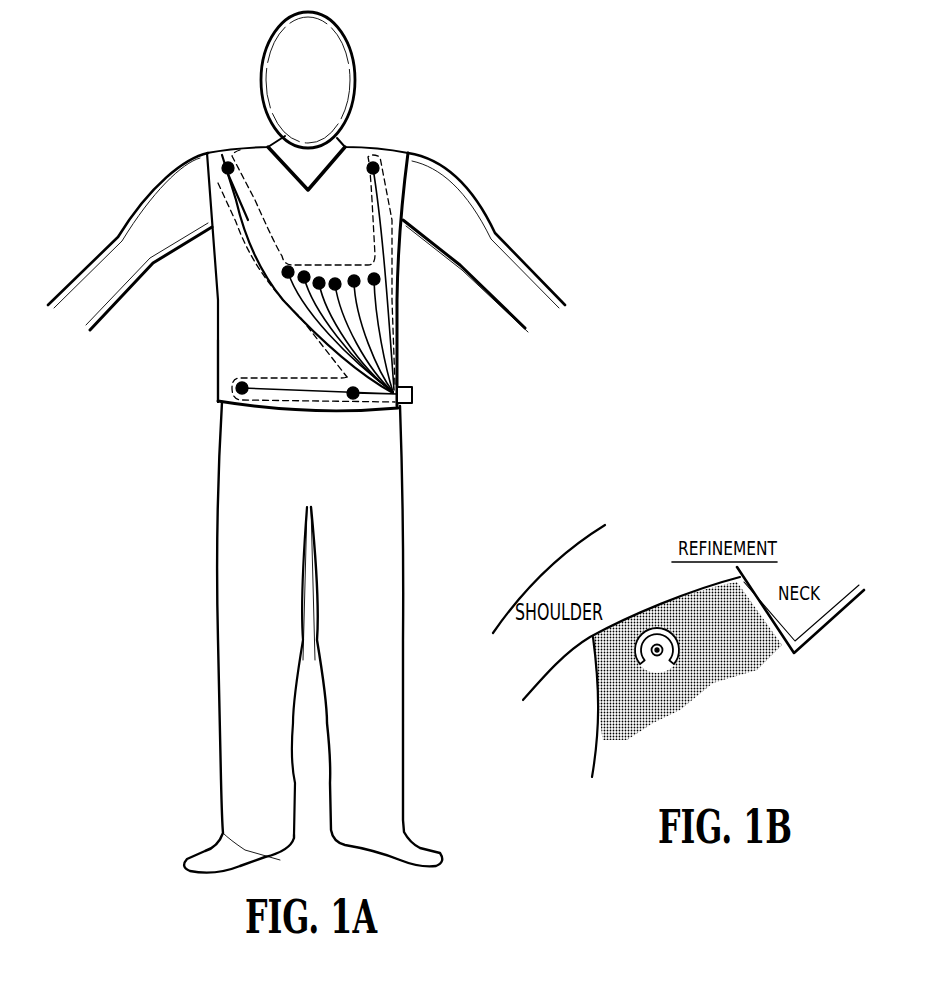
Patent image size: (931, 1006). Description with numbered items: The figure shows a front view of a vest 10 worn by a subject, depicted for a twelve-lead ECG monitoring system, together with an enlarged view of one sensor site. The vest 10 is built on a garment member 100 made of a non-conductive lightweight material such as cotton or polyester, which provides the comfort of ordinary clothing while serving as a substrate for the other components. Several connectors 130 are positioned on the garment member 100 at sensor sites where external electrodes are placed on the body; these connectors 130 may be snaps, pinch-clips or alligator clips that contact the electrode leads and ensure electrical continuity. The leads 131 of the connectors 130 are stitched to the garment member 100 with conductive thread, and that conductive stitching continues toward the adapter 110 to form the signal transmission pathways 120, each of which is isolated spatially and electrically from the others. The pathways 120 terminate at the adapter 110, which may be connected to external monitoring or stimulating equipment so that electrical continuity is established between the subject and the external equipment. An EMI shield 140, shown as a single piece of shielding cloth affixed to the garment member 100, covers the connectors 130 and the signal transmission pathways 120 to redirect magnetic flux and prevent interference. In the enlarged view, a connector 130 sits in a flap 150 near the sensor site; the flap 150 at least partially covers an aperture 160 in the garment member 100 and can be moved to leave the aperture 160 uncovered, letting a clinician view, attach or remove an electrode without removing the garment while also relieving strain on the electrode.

In FIG. 1A, the vest 10 is at (383, 146).
In FIG. 1A, the garment member 100 is at (257, 343).
In FIG. 1A, the adapter 110 is at (417, 394).
In FIG. 1A, the signal transmission pathways 120 is at (248, 238).
In FIG. 1A, the connectors 130 is at (224, 164).
In FIG. 1B, the connectors 130 is at (657, 670).
In FIG. 1A, the leads 131 is at (229, 189).
In FIG. 1A, the EMI shield 140 is at (249, 166).
In FIG. 1B, the flap 150 is at (687, 661).
In FIG. 1B, the aperture 160 is at (683, 662).